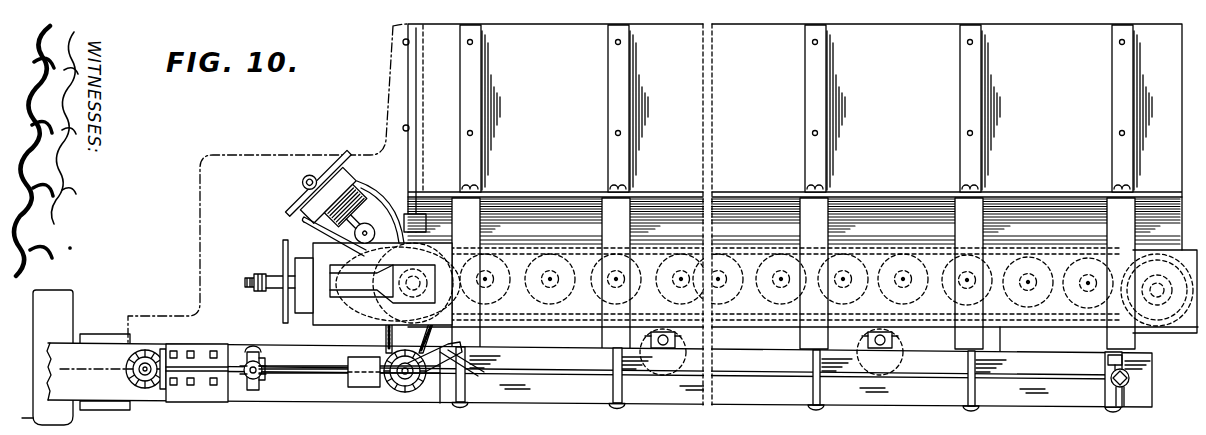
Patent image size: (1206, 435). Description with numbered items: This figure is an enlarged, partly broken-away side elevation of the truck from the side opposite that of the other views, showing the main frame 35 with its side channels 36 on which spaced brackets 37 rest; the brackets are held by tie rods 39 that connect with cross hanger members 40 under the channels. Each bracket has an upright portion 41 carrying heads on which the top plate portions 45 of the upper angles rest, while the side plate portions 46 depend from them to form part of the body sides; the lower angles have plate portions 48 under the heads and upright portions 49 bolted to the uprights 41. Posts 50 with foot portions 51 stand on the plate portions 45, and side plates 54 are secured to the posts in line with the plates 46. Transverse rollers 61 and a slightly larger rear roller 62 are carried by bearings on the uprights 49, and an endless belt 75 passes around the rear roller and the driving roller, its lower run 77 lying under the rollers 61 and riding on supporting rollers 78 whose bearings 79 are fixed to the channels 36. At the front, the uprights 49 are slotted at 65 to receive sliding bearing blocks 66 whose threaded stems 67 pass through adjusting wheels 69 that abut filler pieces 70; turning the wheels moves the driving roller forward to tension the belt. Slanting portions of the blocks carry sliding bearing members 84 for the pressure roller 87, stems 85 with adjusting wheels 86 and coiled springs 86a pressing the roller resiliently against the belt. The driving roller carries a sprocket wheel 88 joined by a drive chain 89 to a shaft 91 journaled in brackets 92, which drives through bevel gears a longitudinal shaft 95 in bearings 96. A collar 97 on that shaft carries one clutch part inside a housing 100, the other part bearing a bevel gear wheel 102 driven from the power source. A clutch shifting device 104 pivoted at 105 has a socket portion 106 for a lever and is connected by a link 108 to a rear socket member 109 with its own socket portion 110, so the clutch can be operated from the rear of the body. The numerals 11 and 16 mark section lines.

The frame bar 11 is at (78, 356).
The section line 16 is at (322, 355).
The main frame 35 is at (742, 407).
The side channels 36 is at (795, 374).
The brackets 37 is at (484, 342).
The tie rods 39 is at (812, 393).
The cross hanger members 40 is at (816, 409).
The upright portions 41 is at (793, 273).
The top plate portions 45 is at (742, 194).
The side plate portions 46 is at (1186, 226).
The plate portions 48 is at (690, 232).
The upright portions 49 is at (1180, 350).
The posts 50 is at (476, 66).
The foot portions 51 is at (480, 184).
The side plates 54 is at (792, 137).
The rollers 61 is at (725, 309).
The rear roller 62 is at (1160, 322).
The slots 65 is at (345, 296).
The bearing blocks 66 is at (400, 266).
The screw threaded stems 67 is at (250, 282).
The adjusting wheels 69 is at (285, 258).
The filler pieces 70 is at (303, 313).
The belt 75 is at (372, 298).
The lower run 77 is at (992, 339).
The supporting rollers 78 is at (690, 341).
The bearings 79 is at (672, 352).
The bearing members 84 is at (320, 228).
The stems 85 is at (356, 198).
The adjusting wheels 86 is at (347, 158).
The coiled springs 86a is at (308, 212).
The pressure roller 87 is at (398, 200).
The sprocket wheel 88 is at (408, 360).
The drive chain 89 is at (385, 341).
The shaft 91 is at (407, 378).
The brackets 92 is at (462, 365).
The shaft 95 is at (330, 365).
The bearings 96 is at (365, 387).
The collar 97 is at (248, 380).
The housing 100 is at (194, 373).
The bevel gear wheel 102 is at (162, 385).
The clutch shifting device 104 is at (262, 356).
The pivot 105 is at (248, 350).
The socket portion 106 is at (268, 368).
The link 108 is at (558, 375).
The rear socket member 109 is at (1108, 365).
The socket portion 110 is at (1112, 385).